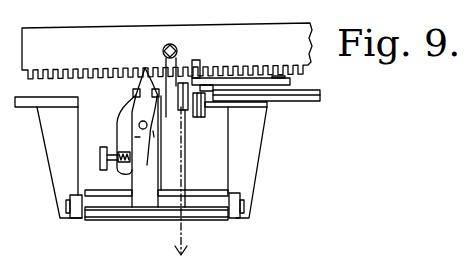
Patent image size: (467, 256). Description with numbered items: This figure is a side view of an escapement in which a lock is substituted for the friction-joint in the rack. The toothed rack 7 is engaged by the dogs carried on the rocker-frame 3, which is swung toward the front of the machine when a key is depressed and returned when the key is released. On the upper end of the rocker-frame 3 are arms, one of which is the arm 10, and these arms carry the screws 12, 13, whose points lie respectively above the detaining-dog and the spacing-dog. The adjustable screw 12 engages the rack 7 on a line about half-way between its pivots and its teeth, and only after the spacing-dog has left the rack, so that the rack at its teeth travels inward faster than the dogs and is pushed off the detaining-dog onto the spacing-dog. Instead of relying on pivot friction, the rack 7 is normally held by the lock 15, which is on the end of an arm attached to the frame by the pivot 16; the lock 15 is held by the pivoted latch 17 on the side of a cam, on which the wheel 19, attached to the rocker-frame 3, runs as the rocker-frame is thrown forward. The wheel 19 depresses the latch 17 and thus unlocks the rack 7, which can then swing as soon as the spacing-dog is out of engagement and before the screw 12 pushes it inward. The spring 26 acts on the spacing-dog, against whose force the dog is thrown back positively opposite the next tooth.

The rack 7 is at (108, 33).
The screw 12 is at (164, 46).
The arm 10 is at (163, 63).
The lock 15 is at (199, 65).
The pivot 16 is at (289, 78).
The screw 13 is at (182, 116).
The pivoted latch 17 is at (194, 116).
The wheel 19 is at (161, 112).
The rocker-frame 3 is at (114, 193).
The spring 26 is at (117, 137).